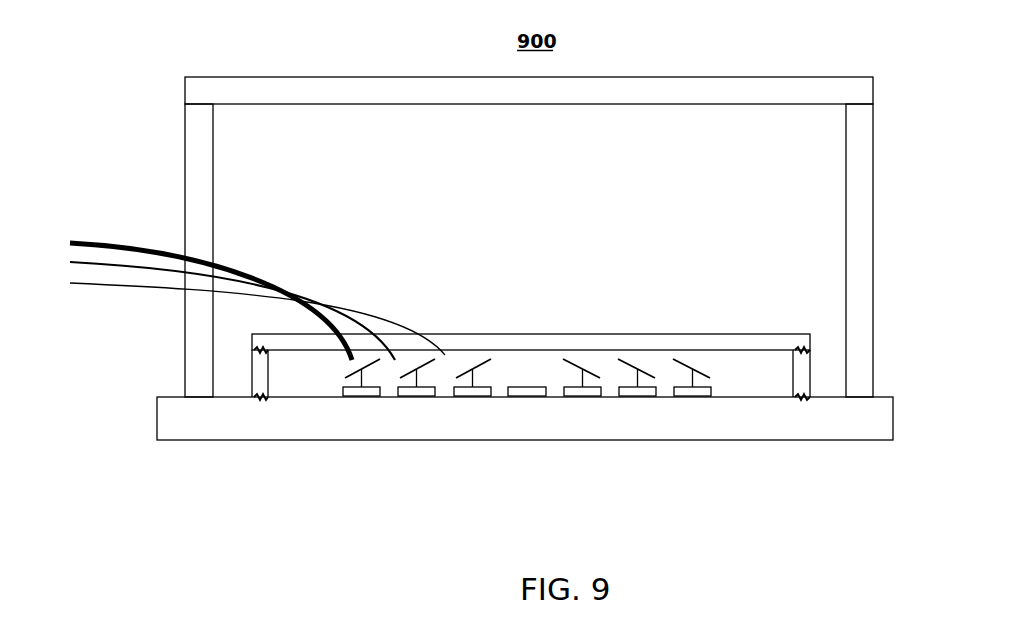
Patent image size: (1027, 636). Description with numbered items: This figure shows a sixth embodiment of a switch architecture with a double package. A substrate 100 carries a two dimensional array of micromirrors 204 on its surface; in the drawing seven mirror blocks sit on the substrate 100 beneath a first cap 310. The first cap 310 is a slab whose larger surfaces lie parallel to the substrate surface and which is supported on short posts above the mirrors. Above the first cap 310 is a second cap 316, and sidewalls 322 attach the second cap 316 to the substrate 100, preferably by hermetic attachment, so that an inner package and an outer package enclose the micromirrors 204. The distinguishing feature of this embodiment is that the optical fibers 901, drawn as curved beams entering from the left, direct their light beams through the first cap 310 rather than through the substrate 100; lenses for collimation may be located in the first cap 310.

The substrate 100 is at (157, 417).
The micromirrors 204 is at (710, 388).
The first cap 310 is at (252, 342).
The second cap 316 is at (185, 89).
The sidewalls 322 is at (185, 152).
The optical fibers 901 is at (152, 288).